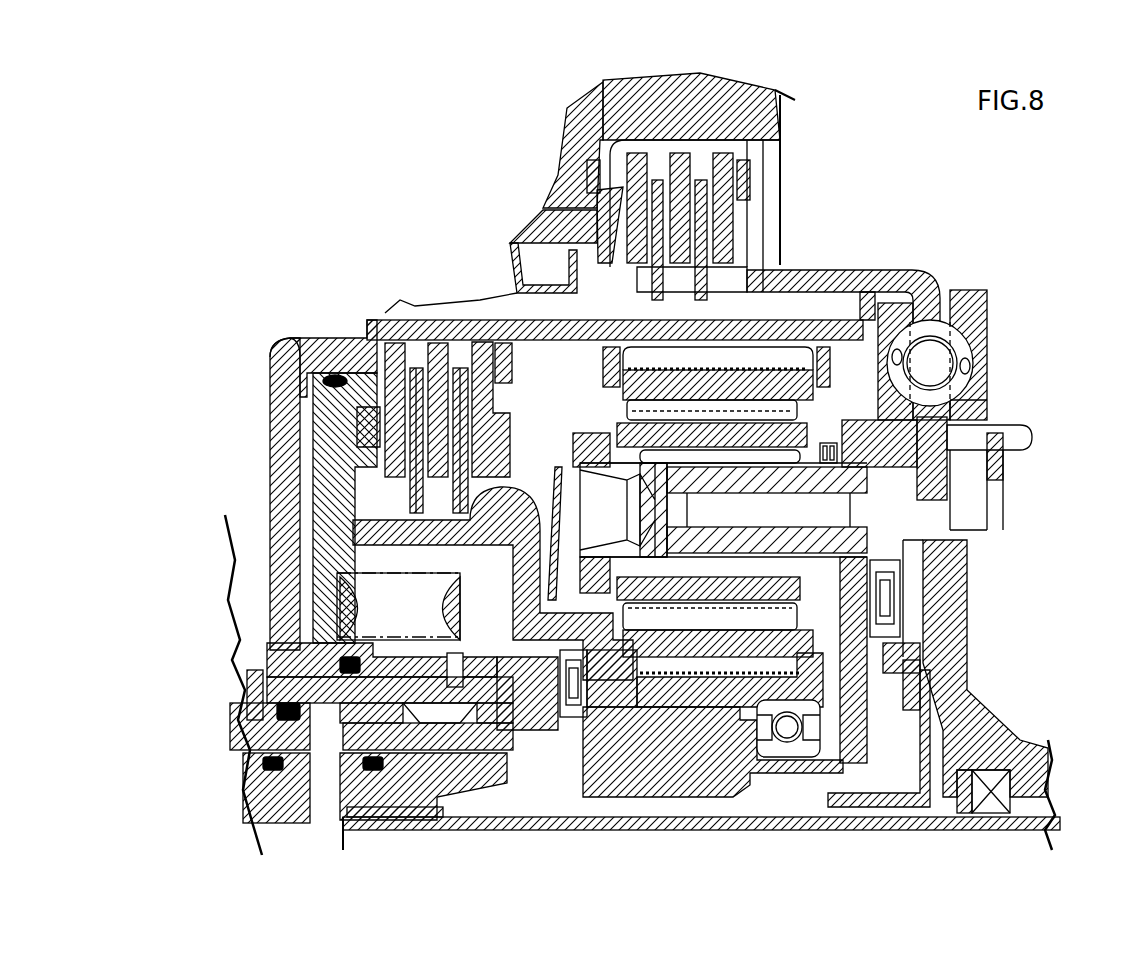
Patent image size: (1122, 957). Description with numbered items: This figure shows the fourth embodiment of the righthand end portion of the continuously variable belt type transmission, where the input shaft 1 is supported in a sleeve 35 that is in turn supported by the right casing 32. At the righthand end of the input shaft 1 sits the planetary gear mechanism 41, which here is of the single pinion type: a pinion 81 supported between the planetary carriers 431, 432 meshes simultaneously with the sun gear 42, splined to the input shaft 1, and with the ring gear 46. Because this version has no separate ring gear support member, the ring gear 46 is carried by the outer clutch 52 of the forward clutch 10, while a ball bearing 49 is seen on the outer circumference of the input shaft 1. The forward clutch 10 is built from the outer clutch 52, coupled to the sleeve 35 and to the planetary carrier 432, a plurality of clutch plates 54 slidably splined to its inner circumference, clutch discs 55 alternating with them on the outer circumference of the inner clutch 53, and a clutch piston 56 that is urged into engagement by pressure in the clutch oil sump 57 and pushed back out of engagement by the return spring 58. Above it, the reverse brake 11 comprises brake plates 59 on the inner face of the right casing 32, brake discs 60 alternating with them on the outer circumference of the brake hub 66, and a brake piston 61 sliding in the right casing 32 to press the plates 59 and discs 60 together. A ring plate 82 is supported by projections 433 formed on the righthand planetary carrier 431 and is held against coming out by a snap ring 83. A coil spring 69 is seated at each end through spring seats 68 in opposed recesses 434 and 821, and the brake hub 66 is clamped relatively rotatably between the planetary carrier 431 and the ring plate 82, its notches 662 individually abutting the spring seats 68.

The input shaft 1 is at (280, 810).
The forward clutch 10 is at (305, 409).
The reverse brake 11 is at (818, 214).
The right casing 32 is at (790, 104).
The sleeve 35 is at (262, 722).
The planetary gear mechanism 41 is at (953, 278).
The sun gear 42 is at (875, 540).
The planetary carrier 431 is at (853, 697).
The planetary carrier 432 is at (590, 435).
The projections 433 is at (1045, 435).
The recesses 434 is at (923, 380).
The ring gear 46 is at (600, 385).
The ball bearing 49 is at (790, 735).
The outer clutch 52 is at (345, 350).
The inner clutch 53 is at (505, 505).
The clutch plates 54 is at (483, 340).
The clutch discs 55 is at (458, 515).
The clutch piston 56 is at (330, 505).
The clutch oil sump 57 is at (305, 455).
The return spring 58 is at (445, 617).
The brake plates 59 is at (640, 152).
The brake discs 60 is at (705, 290).
The brake piston 61 is at (540, 222).
The brake hub 66 is at (835, 272).
The notches 662 is at (975, 415).
The spring seats 68 is at (950, 375).
The coil spring 69 is at (880, 318).
The pinion 81 is at (820, 398).
The ring plate 82 is at (985, 300).
The recesses 821 is at (985, 395).
The snap ring 83 is at (1000, 468).